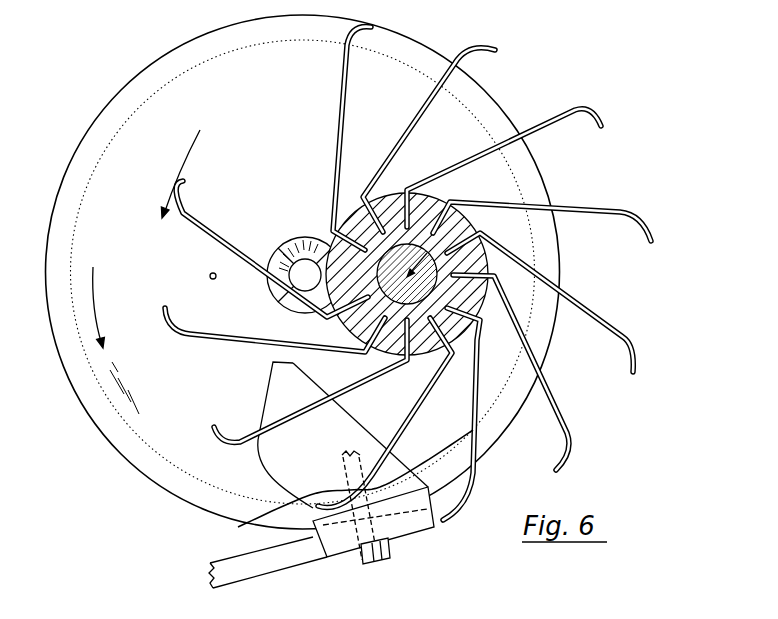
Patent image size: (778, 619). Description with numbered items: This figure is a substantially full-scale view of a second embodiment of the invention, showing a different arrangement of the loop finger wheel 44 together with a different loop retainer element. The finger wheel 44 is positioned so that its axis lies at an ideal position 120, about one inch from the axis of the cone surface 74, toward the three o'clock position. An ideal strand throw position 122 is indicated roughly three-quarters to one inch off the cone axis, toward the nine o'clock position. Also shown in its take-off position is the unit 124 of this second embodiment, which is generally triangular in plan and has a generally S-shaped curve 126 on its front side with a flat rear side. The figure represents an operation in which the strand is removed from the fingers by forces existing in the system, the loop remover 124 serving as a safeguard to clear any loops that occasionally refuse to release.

The cone surface 74 is at (375, 85).
The finger wheel 44 is at (597, 101).
The ideal position for the axis of the finger wheel 120 is at (473, 222).
The ideal strand throw position 122 is at (211, 273).
The loop remover unit 124 is at (252, 394).
The S-shaped curve 126 is at (238, 527).